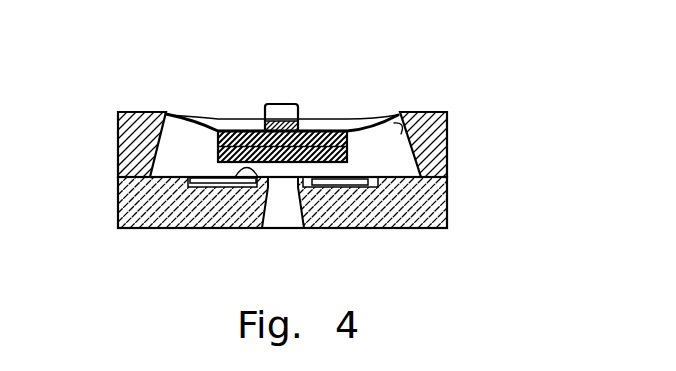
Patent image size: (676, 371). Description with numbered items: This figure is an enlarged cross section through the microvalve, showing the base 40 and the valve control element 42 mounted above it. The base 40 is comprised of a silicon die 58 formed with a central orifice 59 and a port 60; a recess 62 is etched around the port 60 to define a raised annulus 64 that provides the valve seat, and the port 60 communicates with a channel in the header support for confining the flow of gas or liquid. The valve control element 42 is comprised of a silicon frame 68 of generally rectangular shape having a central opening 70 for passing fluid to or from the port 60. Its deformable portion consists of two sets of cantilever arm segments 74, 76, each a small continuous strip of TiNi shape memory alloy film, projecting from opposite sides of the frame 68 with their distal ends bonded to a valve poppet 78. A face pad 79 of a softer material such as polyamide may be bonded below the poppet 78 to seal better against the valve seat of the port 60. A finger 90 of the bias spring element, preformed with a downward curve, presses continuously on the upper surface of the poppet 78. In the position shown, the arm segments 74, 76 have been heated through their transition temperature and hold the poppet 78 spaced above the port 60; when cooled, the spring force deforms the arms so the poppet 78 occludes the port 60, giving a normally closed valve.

The base 40 is at (112, 207).
The valve control element 42 is at (112, 151).
The silicon die 58 is at (447, 199).
The central orifice 59 is at (270, 230).
The port 60 is at (328, 184).
The recess 62 is at (213, 176).
The raised annulus 64 is at (228, 184).
The silicon frame 68 is at (447, 143).
The central opening 70 is at (398, 112).
The cantilever arm segment 74 is at (385, 106).
The cantilever arm segment 76 is at (166, 108).
The valve poppet 78 is at (316, 130).
The face pad 79 is at (217, 153).
The finger 90 is at (275, 104).